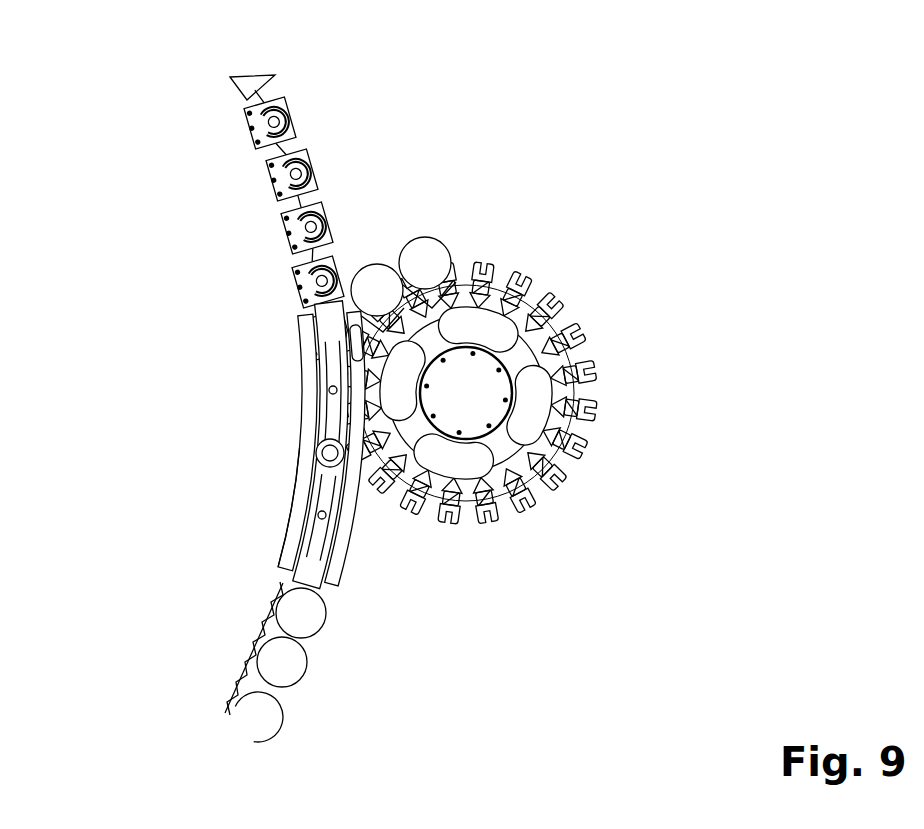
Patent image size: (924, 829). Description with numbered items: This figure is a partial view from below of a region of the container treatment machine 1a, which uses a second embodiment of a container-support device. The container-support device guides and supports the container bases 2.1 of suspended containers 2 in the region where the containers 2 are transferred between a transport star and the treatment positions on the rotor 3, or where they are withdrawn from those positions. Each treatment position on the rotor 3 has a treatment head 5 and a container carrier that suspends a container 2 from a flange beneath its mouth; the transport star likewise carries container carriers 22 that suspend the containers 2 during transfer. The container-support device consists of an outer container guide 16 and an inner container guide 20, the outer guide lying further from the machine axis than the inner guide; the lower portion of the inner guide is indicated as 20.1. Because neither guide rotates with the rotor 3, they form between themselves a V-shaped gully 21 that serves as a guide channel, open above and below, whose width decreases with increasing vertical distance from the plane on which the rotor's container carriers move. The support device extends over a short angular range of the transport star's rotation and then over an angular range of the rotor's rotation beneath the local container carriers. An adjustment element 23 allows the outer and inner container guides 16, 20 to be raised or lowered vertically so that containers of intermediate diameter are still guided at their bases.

The container treatment machine 1a is at (624, 131).
The container 2 is at (433, 258).
The container base 2.1 is at (433, 262).
The rotor 3 is at (250, 658).
The treatment head 5 is at (268, 173).
The outer container guide 16 is at (466, 434).
The inner container guide 20 is at (302, 402).
The guide rail section 20.1 is at (292, 540).
The V-shaped gully 21 is at (333, 560).
The container carrier 22 is at (542, 508).
The adjustment element 23 is at (310, 462).